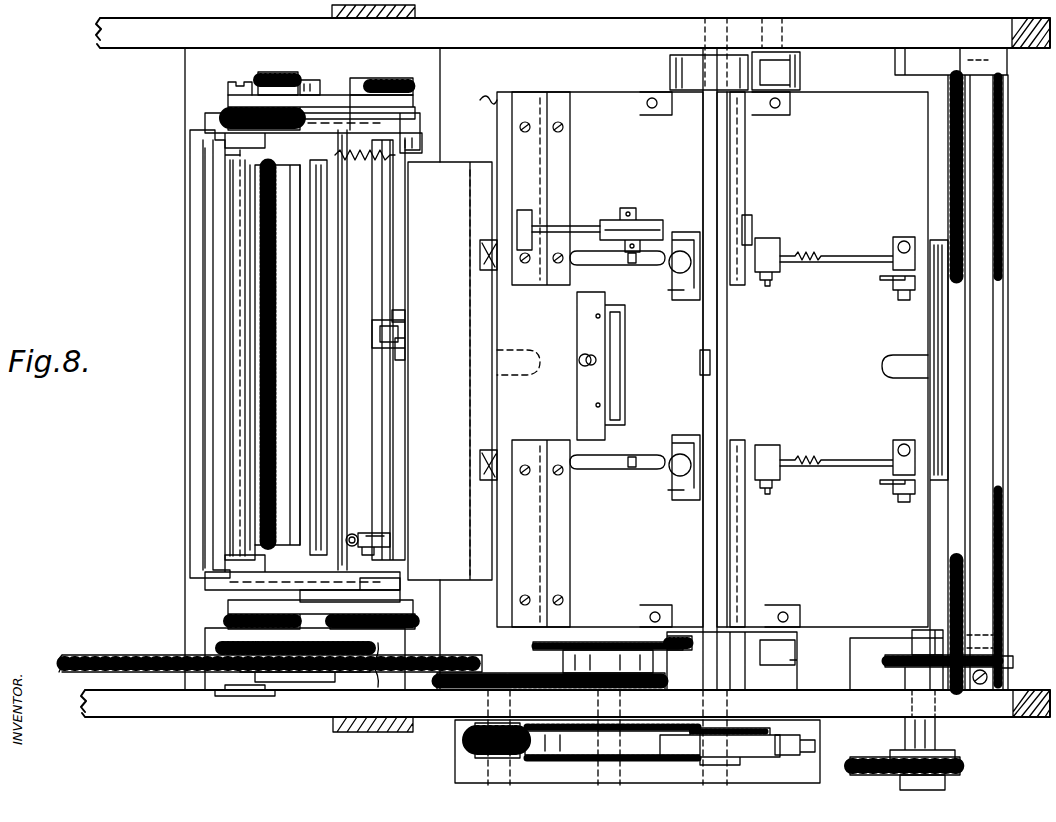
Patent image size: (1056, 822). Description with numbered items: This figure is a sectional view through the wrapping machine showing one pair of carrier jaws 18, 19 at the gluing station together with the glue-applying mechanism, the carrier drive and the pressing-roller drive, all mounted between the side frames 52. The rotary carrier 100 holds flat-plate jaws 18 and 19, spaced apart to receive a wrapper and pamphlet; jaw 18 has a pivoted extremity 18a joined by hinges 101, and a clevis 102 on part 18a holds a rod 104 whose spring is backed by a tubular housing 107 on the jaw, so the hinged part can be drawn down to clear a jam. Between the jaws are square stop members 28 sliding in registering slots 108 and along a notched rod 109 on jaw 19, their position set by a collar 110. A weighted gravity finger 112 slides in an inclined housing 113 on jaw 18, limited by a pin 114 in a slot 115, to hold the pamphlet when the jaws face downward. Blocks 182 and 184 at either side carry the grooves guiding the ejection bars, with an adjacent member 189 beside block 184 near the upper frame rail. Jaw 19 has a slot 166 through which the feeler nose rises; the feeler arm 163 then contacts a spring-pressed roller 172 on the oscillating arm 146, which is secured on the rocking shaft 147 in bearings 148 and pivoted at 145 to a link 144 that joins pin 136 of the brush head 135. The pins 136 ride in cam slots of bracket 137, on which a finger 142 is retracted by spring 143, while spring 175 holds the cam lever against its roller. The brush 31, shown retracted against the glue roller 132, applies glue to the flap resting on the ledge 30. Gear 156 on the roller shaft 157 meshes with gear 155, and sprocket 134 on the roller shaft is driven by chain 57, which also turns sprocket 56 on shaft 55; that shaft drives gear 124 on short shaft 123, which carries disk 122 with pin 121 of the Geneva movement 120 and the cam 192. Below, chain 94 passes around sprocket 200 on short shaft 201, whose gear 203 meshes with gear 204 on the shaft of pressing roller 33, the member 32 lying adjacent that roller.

The side frames 52 is at (566, 28).
The shaft 55 is at (490, 705).
The ledge 30 is at (450, 172).
The brush 31 is at (258, 262).
The brush head 135 is at (218, 482).
The roller 132 is at (290, 290).
The spring-pressed roller 172 is at (347, 451).
The rocking shaft 147 is at (385, 270).
The arm 163 is at (405, 333).
The spring 175 is at (360, 534).
The link 144 is at (228, 88).
The pins 136 is at (242, 80).
The shaft 157 is at (280, 78).
The pivot 145 is at (318, 85).
The bearings 148 is at (400, 85).
The bracket 137 is at (225, 118).
The finger 142 is at (418, 140).
The spring 143 is at (370, 158).
The oscillating arm 146 is at (380, 580).
The gear 156 is at (225, 646).
The chain 57 is at (103, 655).
The sprocket 134 is at (243, 670).
The gear 155 is at (378, 667).
The sprocket 56 is at (477, 658).
The gear 124 is at (585, 659).
The cam 192 is at (630, 644).
The short shaft 123 is at (610, 713).
The Geneva movement 120 is at (770, 735).
The disk 122 is at (575, 758).
The pin 121 is at (680, 760).
The jaw 18 is at (606, 110).
The jaw 19 is at (852, 103).
The pivoted extremity 18a is at (758, 402).
The block 182 is at (735, 650).
The hinges 101 is at (548, 173).
The carrier 100 is at (677, 100).
The block 184 is at (693, 70).
The upper collar 189 is at (772, 82).
The clevis 102 is at (530, 215).
The rod 104 is at (600, 225).
The tubular housing 107 is at (647, 228).
The stop members 28 is at (635, 272).
The collar 110 is at (765, 248).
The notched rod 109 is at (835, 258).
The weighted finger 112 is at (612, 348).
The inclined housing 113 is at (577, 322).
The pin 114 is at (585, 355).
The slot 115 is at (588, 366).
The slots 108 is at (610, 465).
The slot 166 is at (534, 354).
The pressing roller 33 is at (948, 188).
The ribbed member 32 is at (935, 400).
The short shaft 201 is at (912, 643).
The gear 203 is at (882, 660).
The gear 204 is at (1010, 660).
The sprocket 200 is at (938, 756).
The chain 94 is at (868, 760).